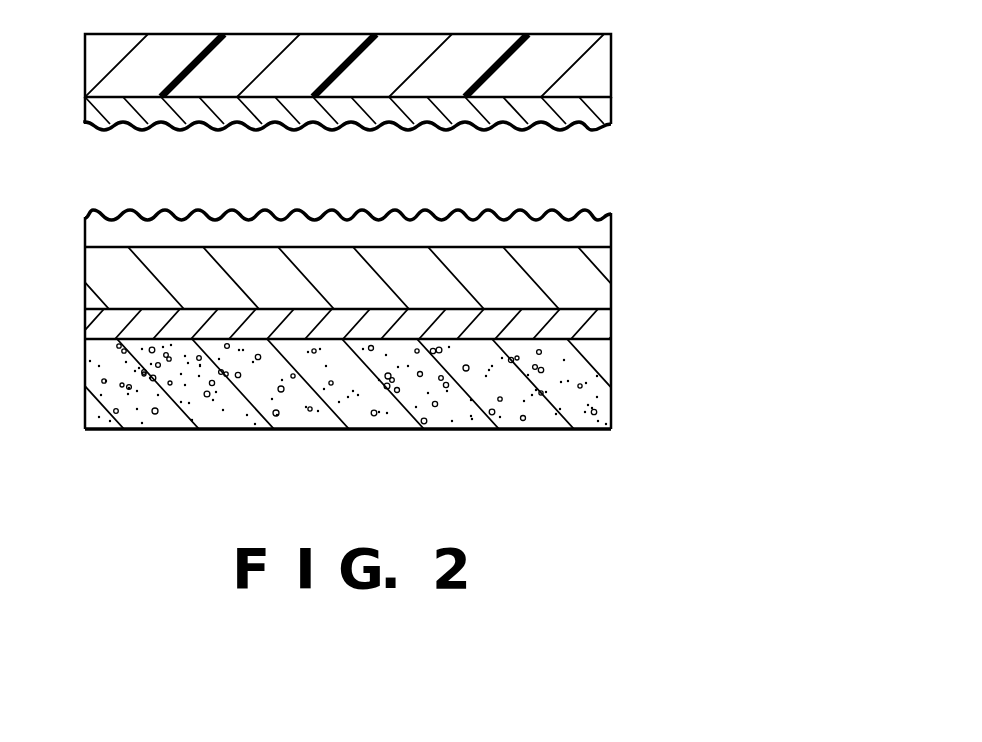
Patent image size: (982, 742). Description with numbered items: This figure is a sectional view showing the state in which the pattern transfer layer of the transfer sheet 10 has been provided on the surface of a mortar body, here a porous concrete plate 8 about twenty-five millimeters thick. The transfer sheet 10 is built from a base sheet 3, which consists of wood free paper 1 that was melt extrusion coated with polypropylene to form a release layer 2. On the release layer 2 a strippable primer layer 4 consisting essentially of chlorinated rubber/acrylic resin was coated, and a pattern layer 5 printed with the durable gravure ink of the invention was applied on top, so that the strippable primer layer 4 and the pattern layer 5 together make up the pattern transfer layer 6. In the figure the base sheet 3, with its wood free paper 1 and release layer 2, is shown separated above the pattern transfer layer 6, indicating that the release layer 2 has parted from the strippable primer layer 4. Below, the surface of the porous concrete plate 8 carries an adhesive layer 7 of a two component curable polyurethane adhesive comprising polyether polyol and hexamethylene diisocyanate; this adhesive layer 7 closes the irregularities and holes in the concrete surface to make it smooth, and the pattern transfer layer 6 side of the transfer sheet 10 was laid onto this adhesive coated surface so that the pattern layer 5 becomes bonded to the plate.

The wood free paper 1 is at (611, 67).
The release layer 2 is at (390, 118).
The base sheet 3 is at (422, 84).
The strippable primer layer 4 is at (611, 233).
The pattern layer 5 is at (373, 279).
The pattern transfer layer 6 is at (405, 255).
The adhesive layer 7 is at (611, 323).
The porous concrete plate 8 is at (611, 407).
The transfer sheet 10 is at (444, 169).